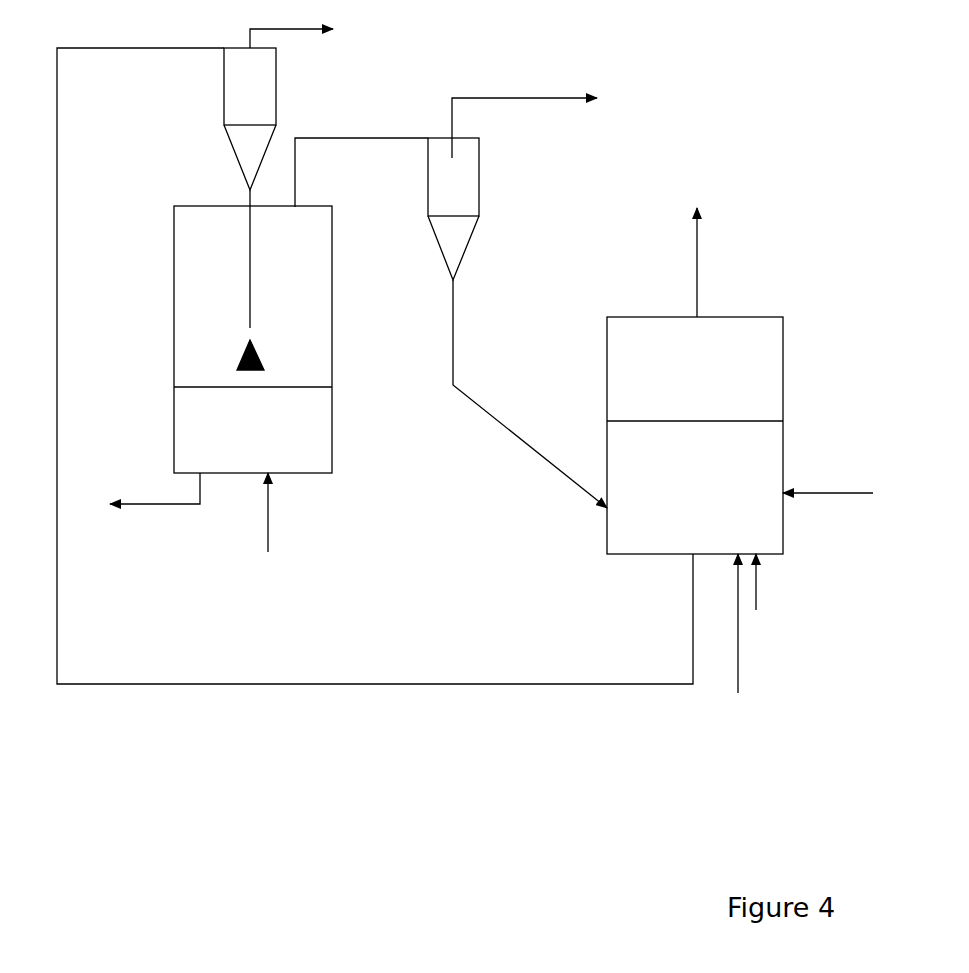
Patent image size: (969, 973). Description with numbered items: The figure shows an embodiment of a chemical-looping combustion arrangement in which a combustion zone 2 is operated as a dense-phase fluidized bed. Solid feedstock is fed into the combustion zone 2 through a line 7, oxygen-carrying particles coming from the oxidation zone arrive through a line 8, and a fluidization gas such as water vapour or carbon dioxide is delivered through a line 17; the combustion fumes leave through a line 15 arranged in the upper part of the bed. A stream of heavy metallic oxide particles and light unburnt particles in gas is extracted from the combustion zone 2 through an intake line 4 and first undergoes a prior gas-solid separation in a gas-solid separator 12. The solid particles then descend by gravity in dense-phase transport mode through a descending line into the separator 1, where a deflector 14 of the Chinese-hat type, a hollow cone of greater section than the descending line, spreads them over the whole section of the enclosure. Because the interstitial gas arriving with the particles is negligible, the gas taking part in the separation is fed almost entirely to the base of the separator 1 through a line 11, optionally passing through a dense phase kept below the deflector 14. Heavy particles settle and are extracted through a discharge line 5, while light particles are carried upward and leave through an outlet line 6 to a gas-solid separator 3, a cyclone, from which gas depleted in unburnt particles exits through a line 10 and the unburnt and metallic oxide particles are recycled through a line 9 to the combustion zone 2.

The separator 1 is at (174, 320).
The combustion zone 2 is at (785, 398).
The gas-solid separator 3 is at (458, 186).
The intake line 4 is at (57, 665).
The discharge line 5 is at (137, 500).
The outlet line 6 is at (365, 135).
The line 7 is at (757, 600).
The line 8 is at (813, 490).
The line 9 is at (455, 378).
The line 10 is at (577, 100).
The line 11 is at (270, 514).
The gas-solid separator 12 is at (255, 80).
The deflector 14 is at (262, 356).
The line 15 is at (697, 247).
The line 17 is at (740, 675).